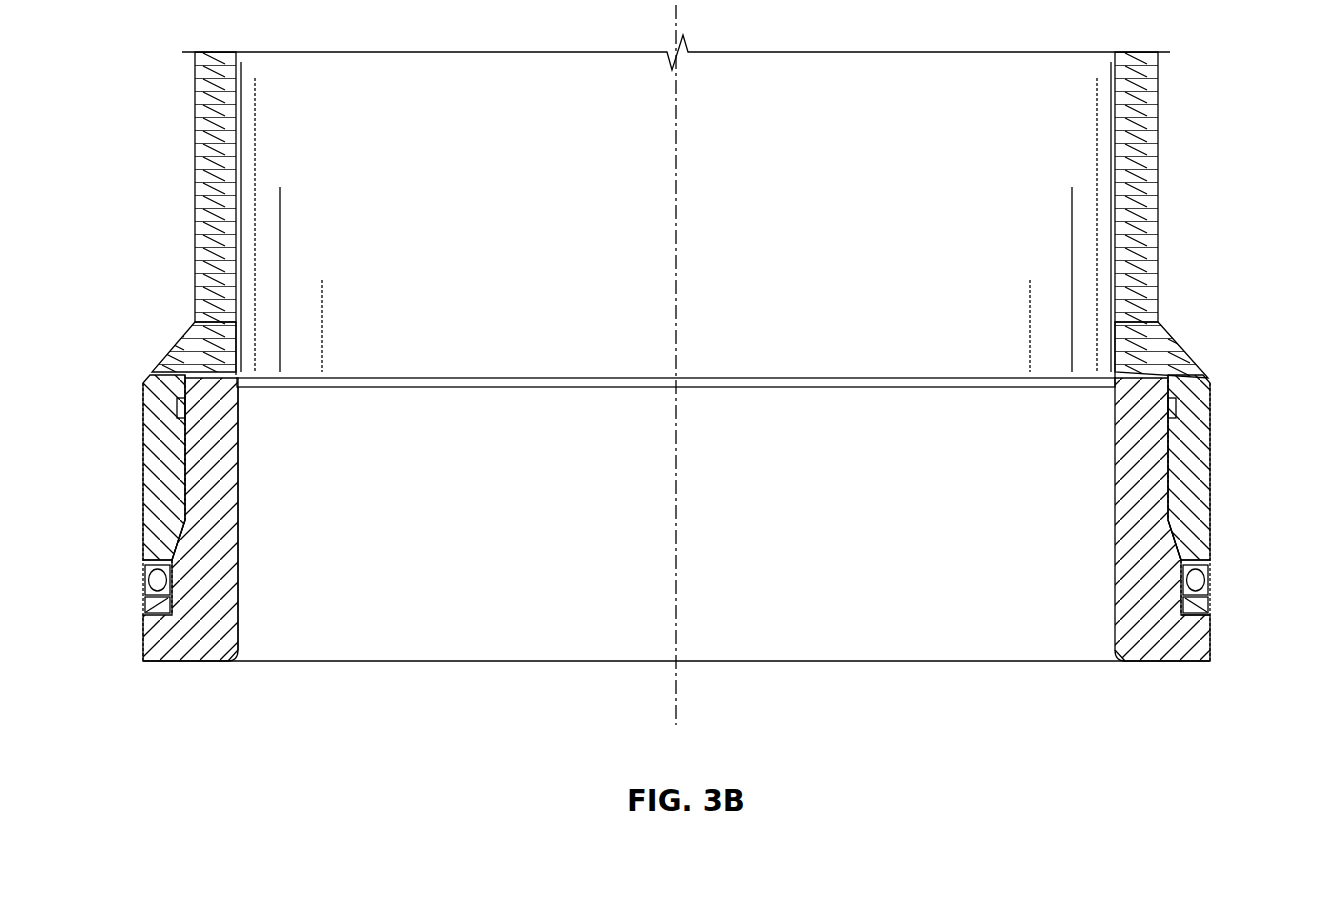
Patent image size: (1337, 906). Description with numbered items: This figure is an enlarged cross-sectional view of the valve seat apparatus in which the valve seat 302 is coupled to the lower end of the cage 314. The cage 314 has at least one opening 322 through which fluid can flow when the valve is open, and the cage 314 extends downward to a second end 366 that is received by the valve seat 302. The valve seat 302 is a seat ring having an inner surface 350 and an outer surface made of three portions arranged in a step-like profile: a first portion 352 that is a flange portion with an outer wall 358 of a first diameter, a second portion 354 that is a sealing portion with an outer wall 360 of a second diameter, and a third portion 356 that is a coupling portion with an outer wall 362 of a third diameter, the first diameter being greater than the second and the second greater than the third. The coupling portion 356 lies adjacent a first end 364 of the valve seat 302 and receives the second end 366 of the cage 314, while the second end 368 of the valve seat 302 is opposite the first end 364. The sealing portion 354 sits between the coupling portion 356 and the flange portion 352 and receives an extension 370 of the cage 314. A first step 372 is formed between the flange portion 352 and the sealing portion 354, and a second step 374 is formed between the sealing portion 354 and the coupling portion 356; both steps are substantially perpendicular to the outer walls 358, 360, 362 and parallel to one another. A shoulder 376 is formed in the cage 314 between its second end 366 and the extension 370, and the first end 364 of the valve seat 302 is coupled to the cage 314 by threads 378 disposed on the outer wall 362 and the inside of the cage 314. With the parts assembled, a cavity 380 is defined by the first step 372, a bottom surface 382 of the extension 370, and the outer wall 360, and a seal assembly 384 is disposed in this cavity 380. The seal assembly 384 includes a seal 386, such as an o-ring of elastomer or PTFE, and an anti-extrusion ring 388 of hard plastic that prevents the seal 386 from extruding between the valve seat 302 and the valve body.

The valve seat 302 is at (225, 648).
The cage 314 is at (195, 130).
The opening 322 is at (236, 216).
The inner surface 350 is at (240, 552).
The first portion 352 is at (165, 650).
The second portion 354 is at (185, 565).
The third portion 356 is at (215, 478).
The outer wall 358 is at (143, 640).
The outer wall 360 is at (172, 545).
The outer wall 362 is at (178, 408).
The first end 364 is at (240, 385).
The second end 366 is at (170, 452).
The second end 368 is at (200, 665).
The extension 370 is at (155, 557).
The first step 372 is at (147, 620).
The second step 374 is at (182, 520).
The shoulder 376 is at (172, 510).
The threads 378 is at (188, 452).
The cavity 380 is at (1185, 572).
The bottom surface 382 is at (1188, 562).
The seal assembly 384 is at (1250, 586).
The seal 386 is at (1200, 580).
The anti-extrusion ring 388 is at (1200, 602).